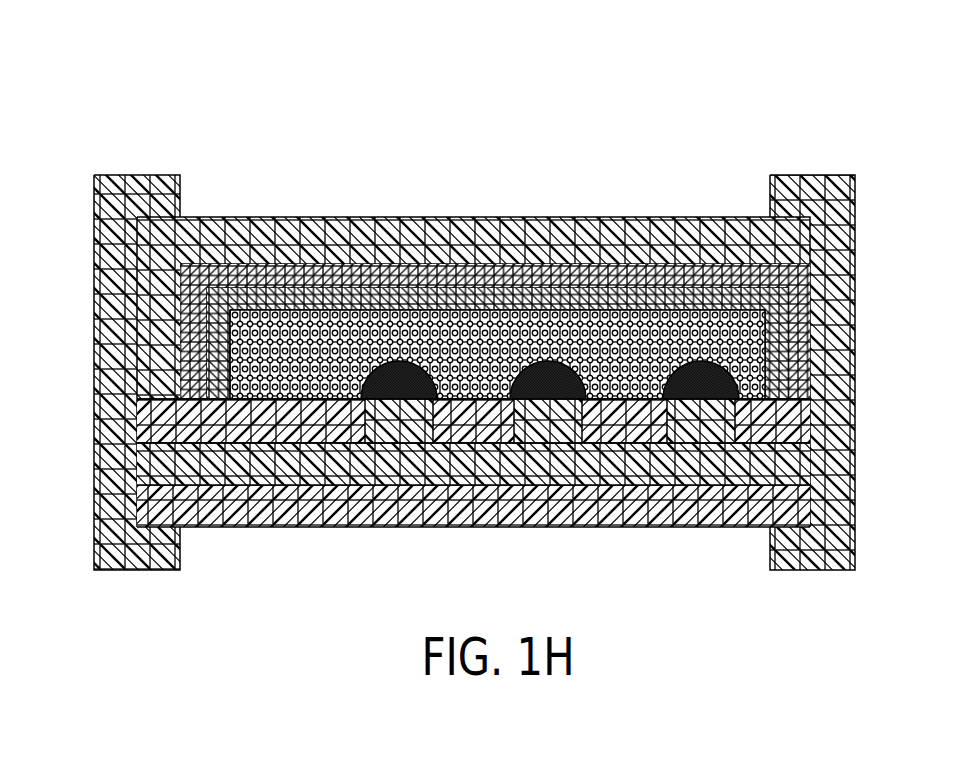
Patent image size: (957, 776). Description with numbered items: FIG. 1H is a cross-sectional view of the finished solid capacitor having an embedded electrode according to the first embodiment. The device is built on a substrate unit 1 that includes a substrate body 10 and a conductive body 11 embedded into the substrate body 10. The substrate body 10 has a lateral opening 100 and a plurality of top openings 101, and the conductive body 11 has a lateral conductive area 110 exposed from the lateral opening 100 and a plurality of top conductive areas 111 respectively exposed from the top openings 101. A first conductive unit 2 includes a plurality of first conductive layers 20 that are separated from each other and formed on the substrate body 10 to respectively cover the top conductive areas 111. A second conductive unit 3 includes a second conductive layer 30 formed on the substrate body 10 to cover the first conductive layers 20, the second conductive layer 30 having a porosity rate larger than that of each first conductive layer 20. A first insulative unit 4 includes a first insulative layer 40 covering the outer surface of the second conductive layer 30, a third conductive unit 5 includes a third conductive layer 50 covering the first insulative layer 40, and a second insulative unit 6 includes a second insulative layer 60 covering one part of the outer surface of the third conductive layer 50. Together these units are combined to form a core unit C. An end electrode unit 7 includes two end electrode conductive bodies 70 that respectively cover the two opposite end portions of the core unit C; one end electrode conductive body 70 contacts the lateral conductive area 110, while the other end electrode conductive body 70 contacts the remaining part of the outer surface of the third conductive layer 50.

The core unit C is at (473, 275).
The substrate unit 1 is at (473, 312).
The substrate body 10 is at (273, 425).
The conductive body 11 is at (335, 460).
The first conductive unit 2 is at (497, 248).
The first conductive layer 20 is at (412, 358).
The second conductive unit 3 is at (497, 248).
The second conductive layer 30 is at (444, 322).
The first insulative unit 4 is at (497, 248).
The first insulative layer 40 is at (478, 297).
The third conductive unit 5 is at (495, 248).
The third conductive layer 50 is at (515, 280).
The second insulative unit 6 is at (473, 312).
The second insulative layer 60 is at (565, 237).
The end electrode unit 7 is at (474, 415).
The end electrode conductive body 70 is at (817, 632).
The lateral opening 100 is at (128, 399).
The lateral conductive area 110 is at (130, 431).
The top opening 101 is at (722, 403).
The top conductive area 111 is at (698, 403).